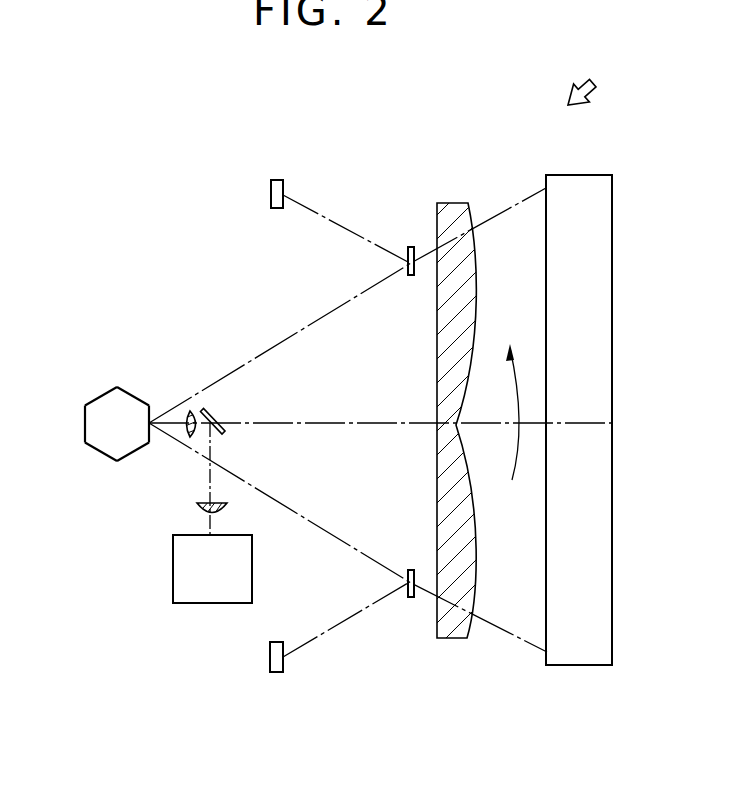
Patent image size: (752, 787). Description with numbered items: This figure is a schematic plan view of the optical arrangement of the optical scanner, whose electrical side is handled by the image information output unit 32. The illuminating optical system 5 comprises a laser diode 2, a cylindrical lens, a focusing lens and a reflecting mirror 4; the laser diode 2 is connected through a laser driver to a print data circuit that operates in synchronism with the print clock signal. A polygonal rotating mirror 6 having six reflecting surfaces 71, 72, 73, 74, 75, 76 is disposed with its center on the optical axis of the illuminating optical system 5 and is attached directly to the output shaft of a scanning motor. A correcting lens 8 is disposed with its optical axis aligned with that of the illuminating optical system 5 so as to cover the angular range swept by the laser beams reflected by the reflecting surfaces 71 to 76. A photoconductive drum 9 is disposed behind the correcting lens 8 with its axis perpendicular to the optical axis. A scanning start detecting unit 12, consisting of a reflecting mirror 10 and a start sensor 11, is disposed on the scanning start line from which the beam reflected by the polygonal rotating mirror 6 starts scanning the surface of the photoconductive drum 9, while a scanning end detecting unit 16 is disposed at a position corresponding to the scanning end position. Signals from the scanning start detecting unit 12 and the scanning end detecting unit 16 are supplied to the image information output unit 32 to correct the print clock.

The laser diode 2 is at (213, 602).
The image information output unit 32 is at (193, 410).
The reflecting mirror 4 is at (215, 407).
The illuminating optical system 5 is at (157, 578).
The polygonal rotating mirror 6 is at (107, 417).
The reflecting surface 71 is at (150, 410).
The reflecting surface 72 is at (137, 458).
The reflecting surface 73 is at (98, 453).
The reflecting surface 74 is at (85, 424).
The reflecting surface 75 is at (98, 392).
The reflecting surface 76 is at (113, 398).
The correcting lens 8 is at (453, 205).
The photoconductive drum 9 is at (612, 305).
The reflecting mirror 10 is at (411, 598).
The start sensor 11 is at (278, 673).
The scanning start detecting unit 12 is at (343, 643).
The scanning end detecting unit 16 is at (358, 198).